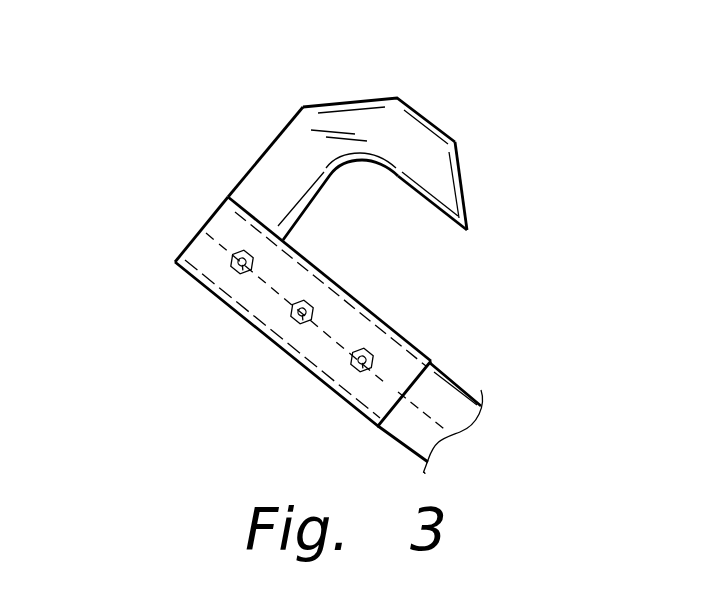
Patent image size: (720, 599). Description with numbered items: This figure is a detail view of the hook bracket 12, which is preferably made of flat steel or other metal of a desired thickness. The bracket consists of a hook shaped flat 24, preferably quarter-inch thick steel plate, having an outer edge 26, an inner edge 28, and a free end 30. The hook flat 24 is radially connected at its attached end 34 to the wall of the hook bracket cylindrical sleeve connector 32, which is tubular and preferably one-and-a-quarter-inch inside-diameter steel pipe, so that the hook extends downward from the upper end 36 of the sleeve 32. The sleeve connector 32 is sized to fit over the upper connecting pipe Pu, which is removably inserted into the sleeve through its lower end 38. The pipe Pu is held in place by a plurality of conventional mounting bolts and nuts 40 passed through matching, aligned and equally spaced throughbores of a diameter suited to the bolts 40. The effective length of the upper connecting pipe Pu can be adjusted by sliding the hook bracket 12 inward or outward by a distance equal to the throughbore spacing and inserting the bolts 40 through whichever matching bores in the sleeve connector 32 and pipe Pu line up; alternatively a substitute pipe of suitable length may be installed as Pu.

The hook bracket 12 is at (349, 86).
The hook shaped flat 24 is at (429, 160).
The outer edge 26 is at (423, 117).
The inner edge 28 is at (424, 208).
The free end 30 is at (462, 180).
The hook bracket cylindrical sleeve connector 32 is at (243, 318).
The attached end 34 is at (257, 216).
The upper end 36 is at (210, 220).
The lower end 38 is at (406, 378).
The mounting bolts and nuts 40 is at (252, 260).
The upper connecting pipe Pu is at (398, 436).